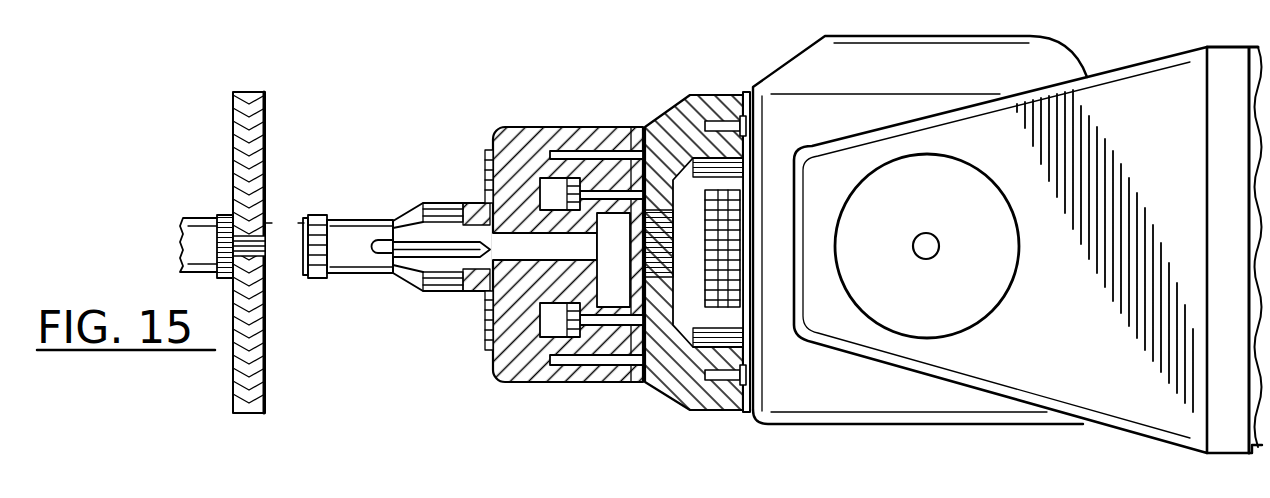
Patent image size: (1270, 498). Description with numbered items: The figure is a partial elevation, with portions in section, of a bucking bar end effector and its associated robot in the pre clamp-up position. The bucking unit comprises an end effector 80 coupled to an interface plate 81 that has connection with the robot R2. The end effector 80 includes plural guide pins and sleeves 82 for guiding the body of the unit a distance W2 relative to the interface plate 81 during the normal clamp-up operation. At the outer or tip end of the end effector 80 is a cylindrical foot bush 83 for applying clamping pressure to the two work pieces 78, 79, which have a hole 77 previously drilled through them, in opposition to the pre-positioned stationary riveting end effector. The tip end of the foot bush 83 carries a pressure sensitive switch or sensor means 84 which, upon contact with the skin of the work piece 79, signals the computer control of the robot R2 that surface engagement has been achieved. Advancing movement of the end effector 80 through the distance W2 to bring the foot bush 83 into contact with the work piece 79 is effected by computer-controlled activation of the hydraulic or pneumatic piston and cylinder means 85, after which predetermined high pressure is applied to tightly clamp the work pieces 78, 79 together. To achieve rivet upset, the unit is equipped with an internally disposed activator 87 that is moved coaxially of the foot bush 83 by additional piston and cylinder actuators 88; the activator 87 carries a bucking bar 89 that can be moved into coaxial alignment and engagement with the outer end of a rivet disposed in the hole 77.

The hole 77 is at (243, 233).
The work piece 78 is at (233, 150).
The work piece 79 is at (265, 140).
The end effector 80 is at (502, 126).
The interface plate 81 is at (665, 117).
The guide pins and sleeves 82 is at (592, 358).
The foot bush 83 is at (353, 274).
The pressure sensitive switch or sensor means 84 is at (307, 274).
The piston and cylinder means 85 is at (553, 327).
The activator 87 is at (513, 233).
The piston and cylinder actuators 88 is at (488, 164).
The bucking bar 89 is at (437, 240).
The distance W2 is at (284, 235).
The robot R2 is at (1058, 370).